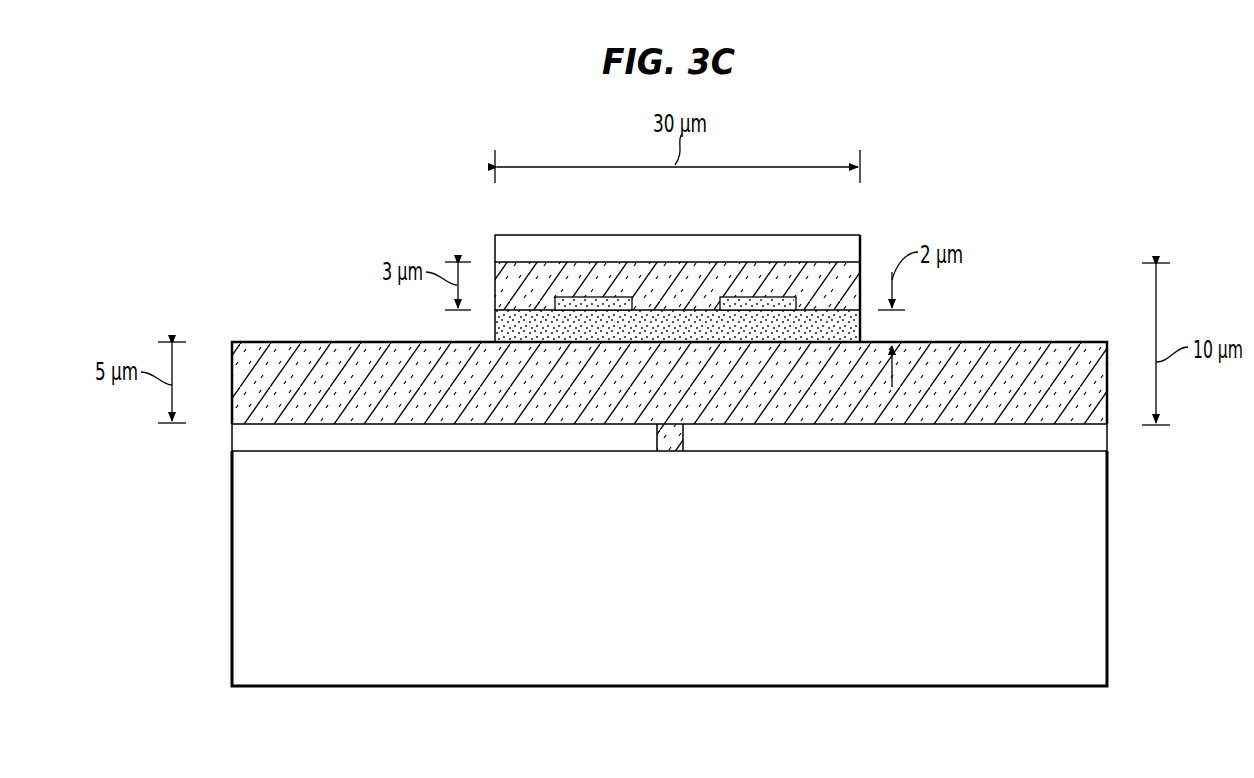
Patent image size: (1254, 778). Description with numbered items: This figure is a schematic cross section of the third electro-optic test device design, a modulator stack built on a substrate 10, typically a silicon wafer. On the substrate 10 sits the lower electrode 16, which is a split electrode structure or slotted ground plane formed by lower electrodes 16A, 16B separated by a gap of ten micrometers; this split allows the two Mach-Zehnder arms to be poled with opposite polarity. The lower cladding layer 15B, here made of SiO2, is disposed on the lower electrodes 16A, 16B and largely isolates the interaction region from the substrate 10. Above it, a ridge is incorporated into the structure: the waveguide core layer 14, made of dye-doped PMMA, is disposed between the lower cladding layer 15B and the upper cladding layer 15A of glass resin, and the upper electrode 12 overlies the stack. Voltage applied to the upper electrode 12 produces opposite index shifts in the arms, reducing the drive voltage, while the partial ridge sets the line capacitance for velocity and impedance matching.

The substrate 10 is at (1108, 567).
The upper electrode 12 is at (495, 243).
The waveguide layer 14 is at (813, 308).
The upper cladding layer 15A is at (663, 272).
The lower cladding layer 15B is at (1058, 343).
The lower electrode 16 is at (702, 452).
The lower electrode 16A is at (1107, 435).
The lower electrode 16B is at (232, 430).